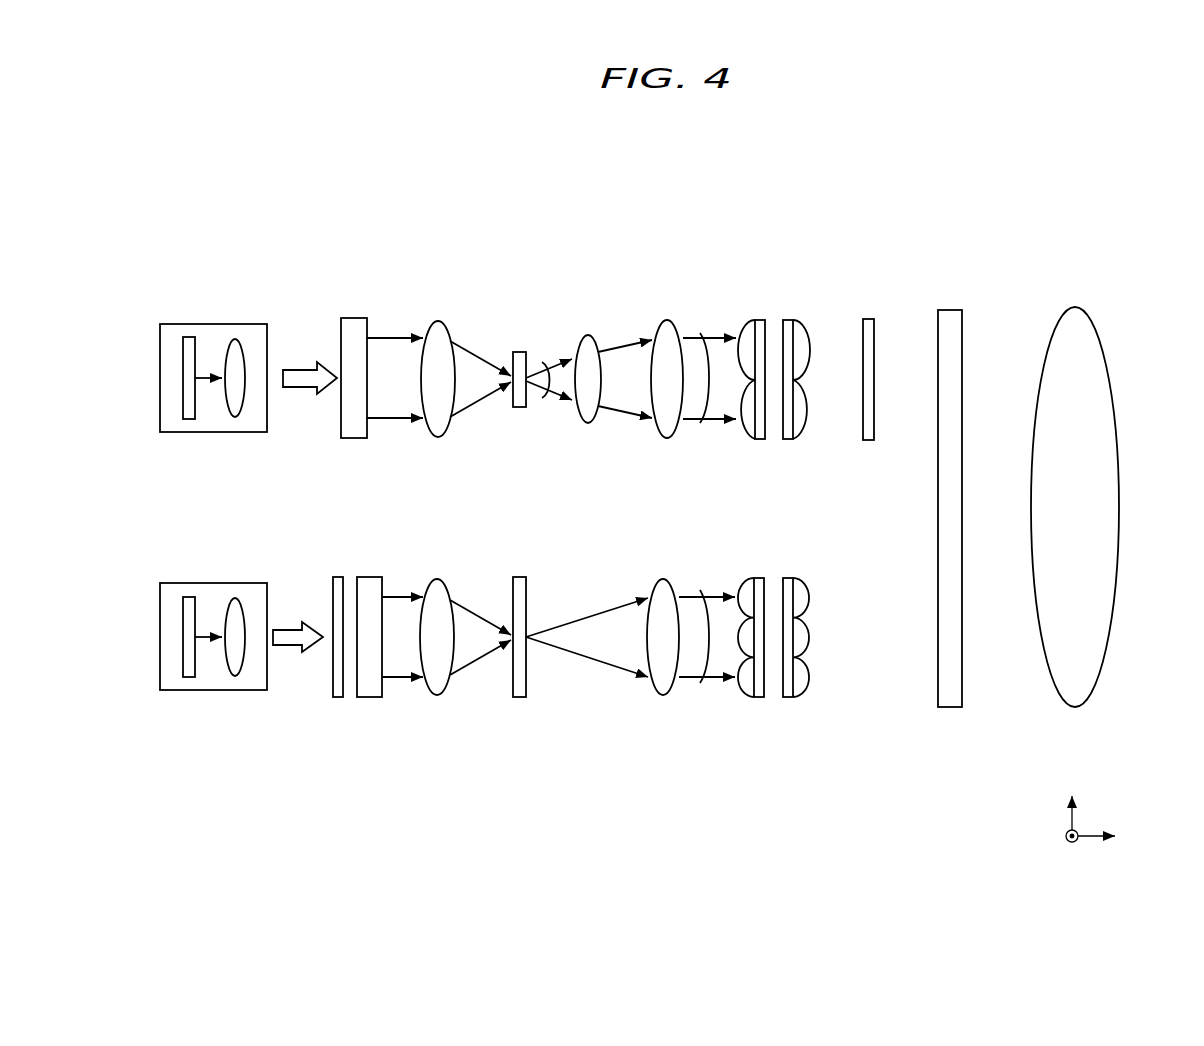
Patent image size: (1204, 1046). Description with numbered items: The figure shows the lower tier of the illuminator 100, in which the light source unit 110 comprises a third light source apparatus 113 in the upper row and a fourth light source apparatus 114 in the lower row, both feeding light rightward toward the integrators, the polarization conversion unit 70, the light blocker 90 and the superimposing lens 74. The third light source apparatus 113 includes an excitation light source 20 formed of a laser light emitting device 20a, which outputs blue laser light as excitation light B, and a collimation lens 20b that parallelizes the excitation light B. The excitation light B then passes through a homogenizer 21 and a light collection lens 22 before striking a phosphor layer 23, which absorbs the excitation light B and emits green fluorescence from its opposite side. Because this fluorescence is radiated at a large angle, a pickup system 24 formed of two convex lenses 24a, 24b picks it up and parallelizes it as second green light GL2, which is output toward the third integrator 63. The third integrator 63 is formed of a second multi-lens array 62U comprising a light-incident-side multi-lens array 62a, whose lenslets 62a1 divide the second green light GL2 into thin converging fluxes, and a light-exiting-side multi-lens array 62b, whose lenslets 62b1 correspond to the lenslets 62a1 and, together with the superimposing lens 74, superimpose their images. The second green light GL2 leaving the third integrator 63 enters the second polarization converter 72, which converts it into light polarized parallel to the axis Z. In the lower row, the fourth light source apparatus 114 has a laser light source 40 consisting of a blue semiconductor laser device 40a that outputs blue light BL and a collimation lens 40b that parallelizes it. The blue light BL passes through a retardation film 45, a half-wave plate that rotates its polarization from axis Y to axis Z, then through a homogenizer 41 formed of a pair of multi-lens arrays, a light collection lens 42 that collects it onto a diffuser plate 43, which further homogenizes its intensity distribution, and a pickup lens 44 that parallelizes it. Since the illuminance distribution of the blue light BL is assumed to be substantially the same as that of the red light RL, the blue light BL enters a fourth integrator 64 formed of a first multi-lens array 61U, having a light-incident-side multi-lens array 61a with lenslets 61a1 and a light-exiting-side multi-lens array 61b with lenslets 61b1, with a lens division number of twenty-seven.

The illuminator 100 is at (1163, 222).
The light source unit 110 is at (503, 508).
The third light source apparatus 113 is at (314, 228).
The fourth light source apparatus 114 is at (313, 790).
The excitation light source 20 is at (270, 253).
The laser light emitting device 20a is at (187, 337).
The collimation lens 20b is at (236, 340).
The excitation light B is at (203, 376).
The homogenizer 21 is at (350, 318).
The light collection lens 22 is at (437, 321).
The phosphor layer 23 is at (522, 352).
The pickup system 24 is at (682, 233).
The convex lens 24a is at (590, 335).
The convex lens 24b is at (665, 320).
The second green light GL2 is at (548, 364).
The second multi-lens array 62U is at (779, 337).
The third integrator 63 is at (833, 232).
The light-incident-side multi-lens array 62a is at (741, 320).
The lenslets 62a1 is at (746, 426).
The light-exiting-side multi-lens array 62b is at (808, 320).
The lenslets 62b1 is at (804, 422).
The polarization conversion unit 70 is at (900, 335).
The second polarization converter 72 is at (870, 322).
The light blocker 90 is at (945, 320).
The superimposing lens 74 is at (1080, 316).
The laser light source 40 is at (268, 761).
The blue semiconductor laser device 40a is at (185, 677).
The collimation lens 40b is at (238, 672).
The red light RL is at (201, 639).
The blue light BL is at (293, 647).
The retardation film 45 is at (338, 697).
The homogenizer 41 is at (370, 697).
The light collection lens 42 is at (437, 695).
The diffuser plate 43 is at (520, 697).
The pickup lens 44 is at (660, 695).
The first multi-lens array 61U is at (778, 682).
The fourth integrator 64 is at (832, 790).
The light-incident-side multi-lens array 61a is at (742, 698).
The lenslets 61a1 is at (746, 596).
The light-exiting-side multi-lens array 61b is at (808, 698).
The lenslets 61b1 is at (803, 596).